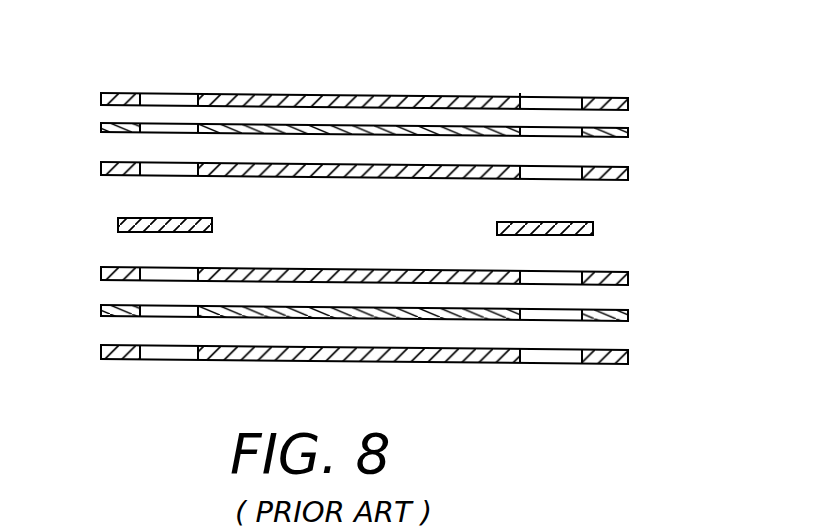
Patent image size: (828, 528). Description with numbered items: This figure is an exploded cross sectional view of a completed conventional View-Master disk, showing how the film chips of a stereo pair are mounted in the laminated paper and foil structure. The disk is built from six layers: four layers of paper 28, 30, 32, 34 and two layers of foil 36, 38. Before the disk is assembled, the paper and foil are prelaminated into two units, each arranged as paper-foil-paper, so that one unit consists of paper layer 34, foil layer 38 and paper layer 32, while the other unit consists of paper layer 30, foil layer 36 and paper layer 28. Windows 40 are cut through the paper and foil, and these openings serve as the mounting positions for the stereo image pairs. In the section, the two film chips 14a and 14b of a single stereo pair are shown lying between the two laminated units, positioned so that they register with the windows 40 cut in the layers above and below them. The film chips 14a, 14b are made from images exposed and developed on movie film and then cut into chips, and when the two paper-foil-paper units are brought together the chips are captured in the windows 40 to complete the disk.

The film chip 14a is at (118, 226).
The film chip 14b is at (594, 229).
The layer of paper 28 is at (628, 355).
The layer of paper 30 is at (628, 279).
The layer of paper 32 is at (628, 173).
The layer of paper 34 is at (628, 103).
The layer of foil 36 is at (628, 316).
The layer of foil 38 is at (628, 131).
The windows 40 is at (146, 97).